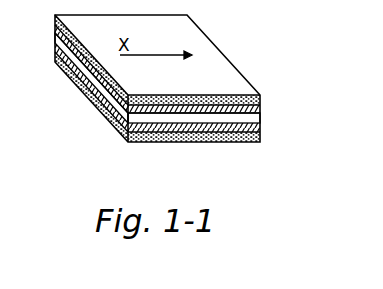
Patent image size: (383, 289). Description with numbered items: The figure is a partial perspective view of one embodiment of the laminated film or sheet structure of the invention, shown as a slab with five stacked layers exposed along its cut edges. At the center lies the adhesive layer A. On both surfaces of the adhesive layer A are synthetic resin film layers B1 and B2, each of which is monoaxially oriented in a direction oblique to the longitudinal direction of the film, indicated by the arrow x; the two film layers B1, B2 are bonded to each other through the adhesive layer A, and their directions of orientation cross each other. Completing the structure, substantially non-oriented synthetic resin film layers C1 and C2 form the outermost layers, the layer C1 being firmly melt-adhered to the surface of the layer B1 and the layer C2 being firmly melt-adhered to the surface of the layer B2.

The substantially non-oriented synthetic resin film layer C1 is at (258, 103).
The synthetic resin film layer B1 is at (258, 111).
The adhesive layer A is at (260, 118).
The synthetic resin film layer B2 is at (260, 126).
The substantially non-oriented synthetic resin film layer C2 is at (260, 136).